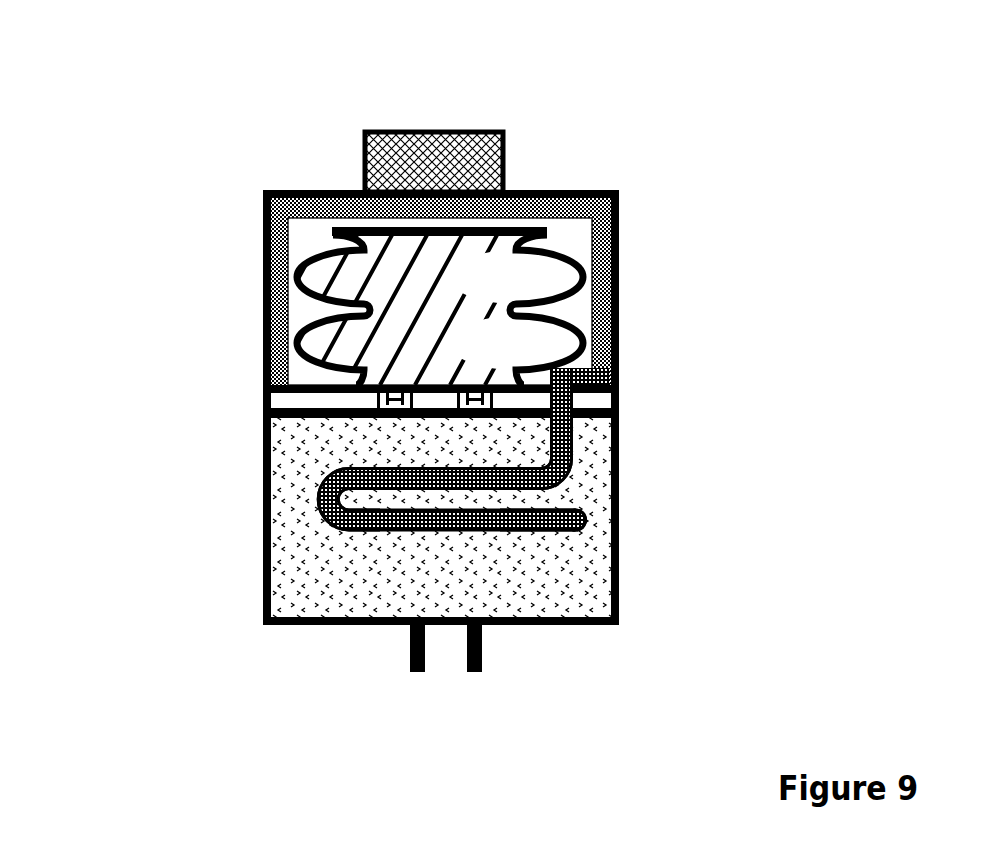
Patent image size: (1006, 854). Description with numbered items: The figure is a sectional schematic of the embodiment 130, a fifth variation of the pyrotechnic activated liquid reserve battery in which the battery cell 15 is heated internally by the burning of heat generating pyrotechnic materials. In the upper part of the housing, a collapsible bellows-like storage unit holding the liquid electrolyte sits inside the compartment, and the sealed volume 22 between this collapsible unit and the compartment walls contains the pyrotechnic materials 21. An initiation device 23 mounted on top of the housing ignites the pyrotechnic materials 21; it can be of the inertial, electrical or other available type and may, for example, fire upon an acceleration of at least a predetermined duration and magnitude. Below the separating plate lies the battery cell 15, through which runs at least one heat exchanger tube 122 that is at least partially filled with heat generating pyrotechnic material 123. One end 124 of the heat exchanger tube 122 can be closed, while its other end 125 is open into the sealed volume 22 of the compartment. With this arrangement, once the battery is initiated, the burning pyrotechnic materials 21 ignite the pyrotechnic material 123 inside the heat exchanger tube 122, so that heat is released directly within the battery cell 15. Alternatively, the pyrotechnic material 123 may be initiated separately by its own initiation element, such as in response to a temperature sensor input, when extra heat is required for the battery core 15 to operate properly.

The embodiment 130 is at (748, 114).
The battery cell 15 is at (295, 586).
The pyrotechnic materials 21 is at (313, 232).
The sealed volume 22 is at (581, 305).
The initiation device 23 is at (439, 143).
The heat exchanger tube 122 is at (304, 500).
The heat generating pyrotechnic material 123 is at (537, 467).
The end of the heat exchanger tube 124 is at (600, 520).
The other end of the heat exchanger tube 125 is at (586, 398).